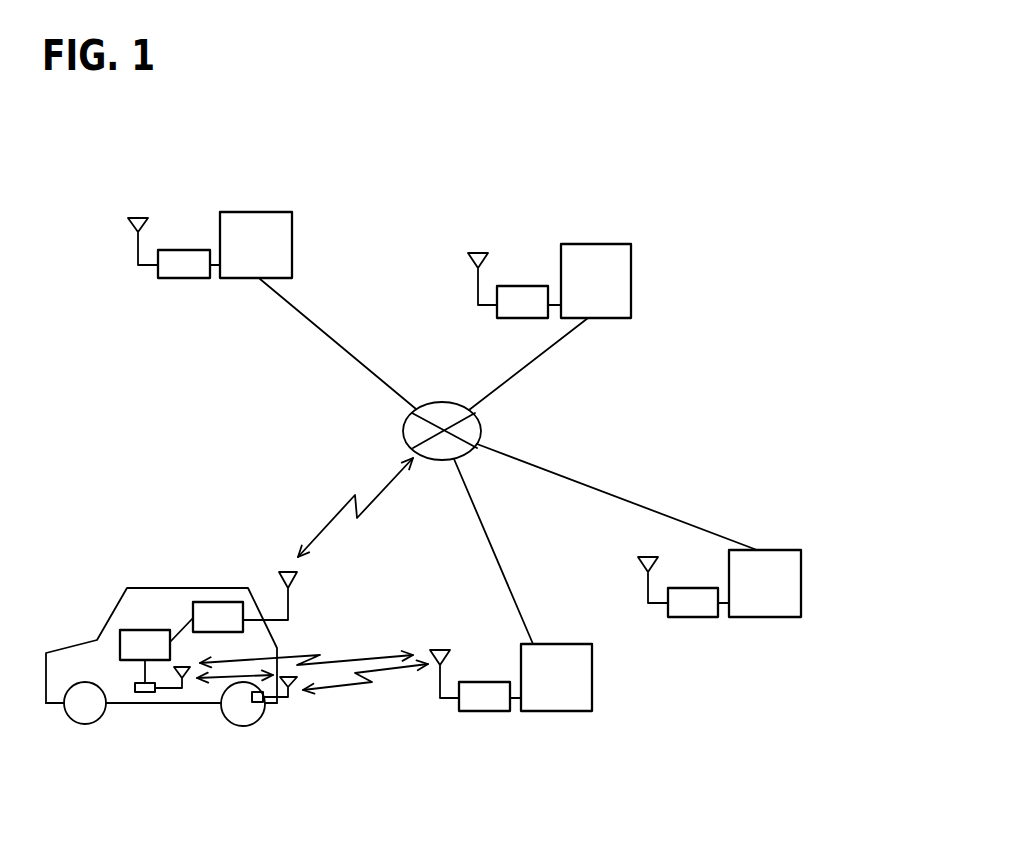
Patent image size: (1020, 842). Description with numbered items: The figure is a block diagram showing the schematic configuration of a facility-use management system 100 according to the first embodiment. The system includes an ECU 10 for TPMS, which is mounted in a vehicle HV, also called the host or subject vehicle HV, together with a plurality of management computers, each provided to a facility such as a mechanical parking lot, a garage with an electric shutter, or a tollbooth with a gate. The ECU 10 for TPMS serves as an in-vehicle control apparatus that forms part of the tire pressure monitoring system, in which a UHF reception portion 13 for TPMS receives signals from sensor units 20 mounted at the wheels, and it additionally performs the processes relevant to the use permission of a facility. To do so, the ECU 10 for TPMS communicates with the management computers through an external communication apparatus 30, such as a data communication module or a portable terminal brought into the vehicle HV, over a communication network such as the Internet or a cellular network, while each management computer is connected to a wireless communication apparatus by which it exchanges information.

The facility-use management system 100 is at (783, 119).
The vehicle HV is at (160, 588).
The ECU for TPMS 10 is at (128, 630).
The external communication apparatus 30 is at (218, 602).
The UHF reception portion for TPMS 13 is at (147, 694).
The sensor unit 20 is at (257, 703).